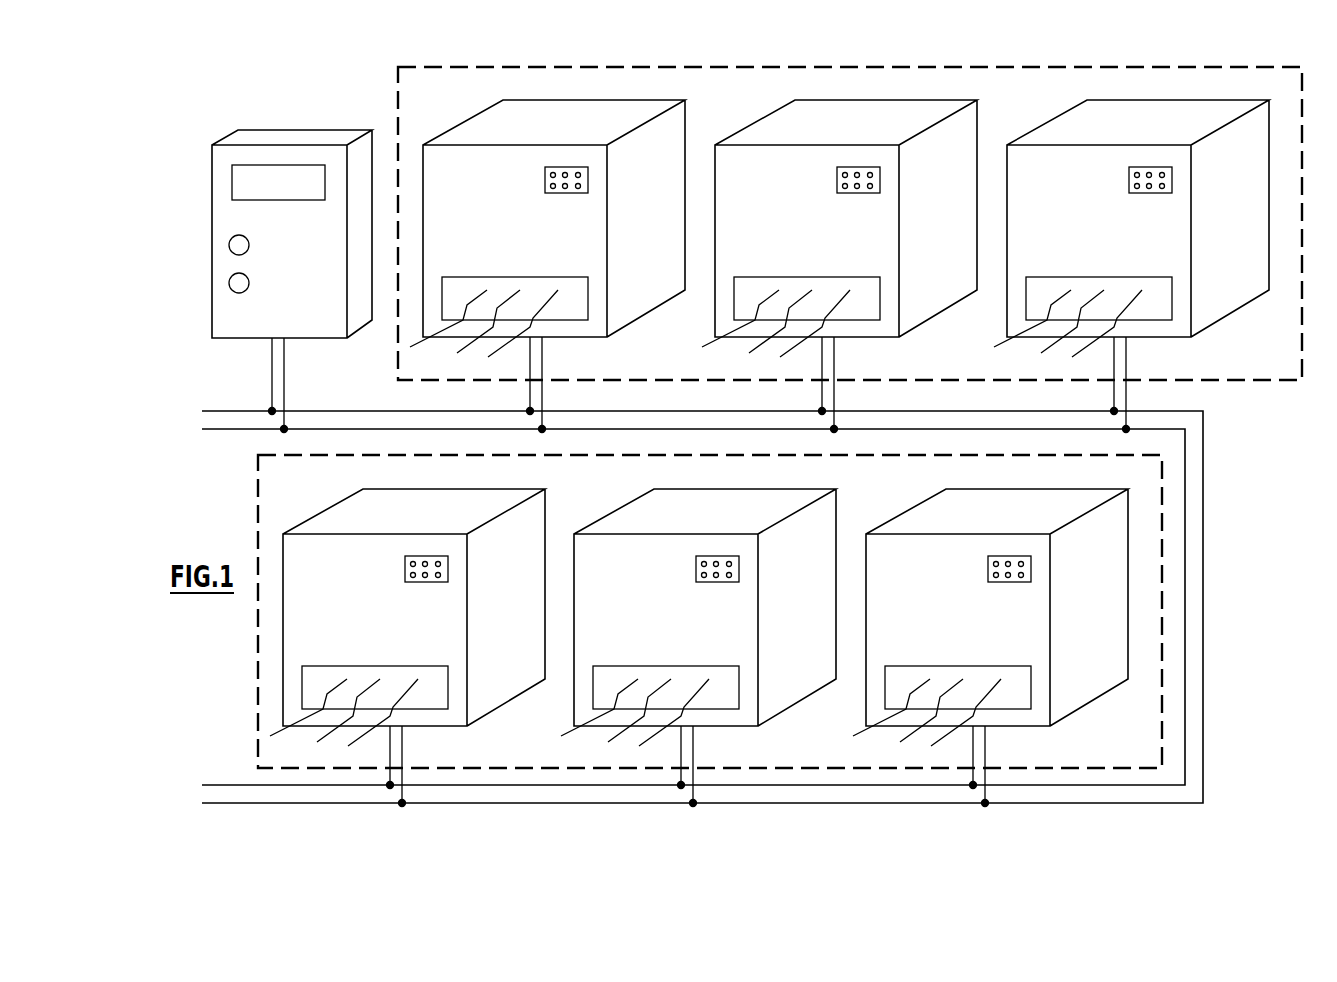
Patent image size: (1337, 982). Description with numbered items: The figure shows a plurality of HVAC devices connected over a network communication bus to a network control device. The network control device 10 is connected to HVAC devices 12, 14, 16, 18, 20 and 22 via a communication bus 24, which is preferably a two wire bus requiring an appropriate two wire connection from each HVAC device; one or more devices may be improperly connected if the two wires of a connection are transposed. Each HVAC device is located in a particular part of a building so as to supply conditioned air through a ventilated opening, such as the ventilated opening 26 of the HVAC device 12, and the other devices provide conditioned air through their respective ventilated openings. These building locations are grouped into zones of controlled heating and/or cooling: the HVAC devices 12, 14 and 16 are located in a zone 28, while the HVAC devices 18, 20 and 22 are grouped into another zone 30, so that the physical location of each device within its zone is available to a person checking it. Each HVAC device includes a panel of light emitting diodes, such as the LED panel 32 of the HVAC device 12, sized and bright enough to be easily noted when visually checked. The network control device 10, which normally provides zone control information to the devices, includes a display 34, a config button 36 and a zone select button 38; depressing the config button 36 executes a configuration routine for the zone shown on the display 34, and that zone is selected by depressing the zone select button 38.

The network control device 10 is at (267, 268).
The HVAC device 12 is at (561, 256).
The HVAC device 14 is at (918, 113).
The HVAC device 16 is at (1212, 113).
The HVAC device 18 is at (1072, 502).
The HVAC device 20 is at (778, 502).
The HVAC device 22 is at (488, 502).
The communication bus 24 is at (1203, 475).
The ventilated opening 26 is at (515, 281).
The zone 28 is at (1223, 382).
The zone 30 is at (258, 700).
The LED panel 32 is at (538, 178).
The display 34 is at (232, 181).
The config button 36 is at (229, 243).
The zone select button 38 is at (229, 282).